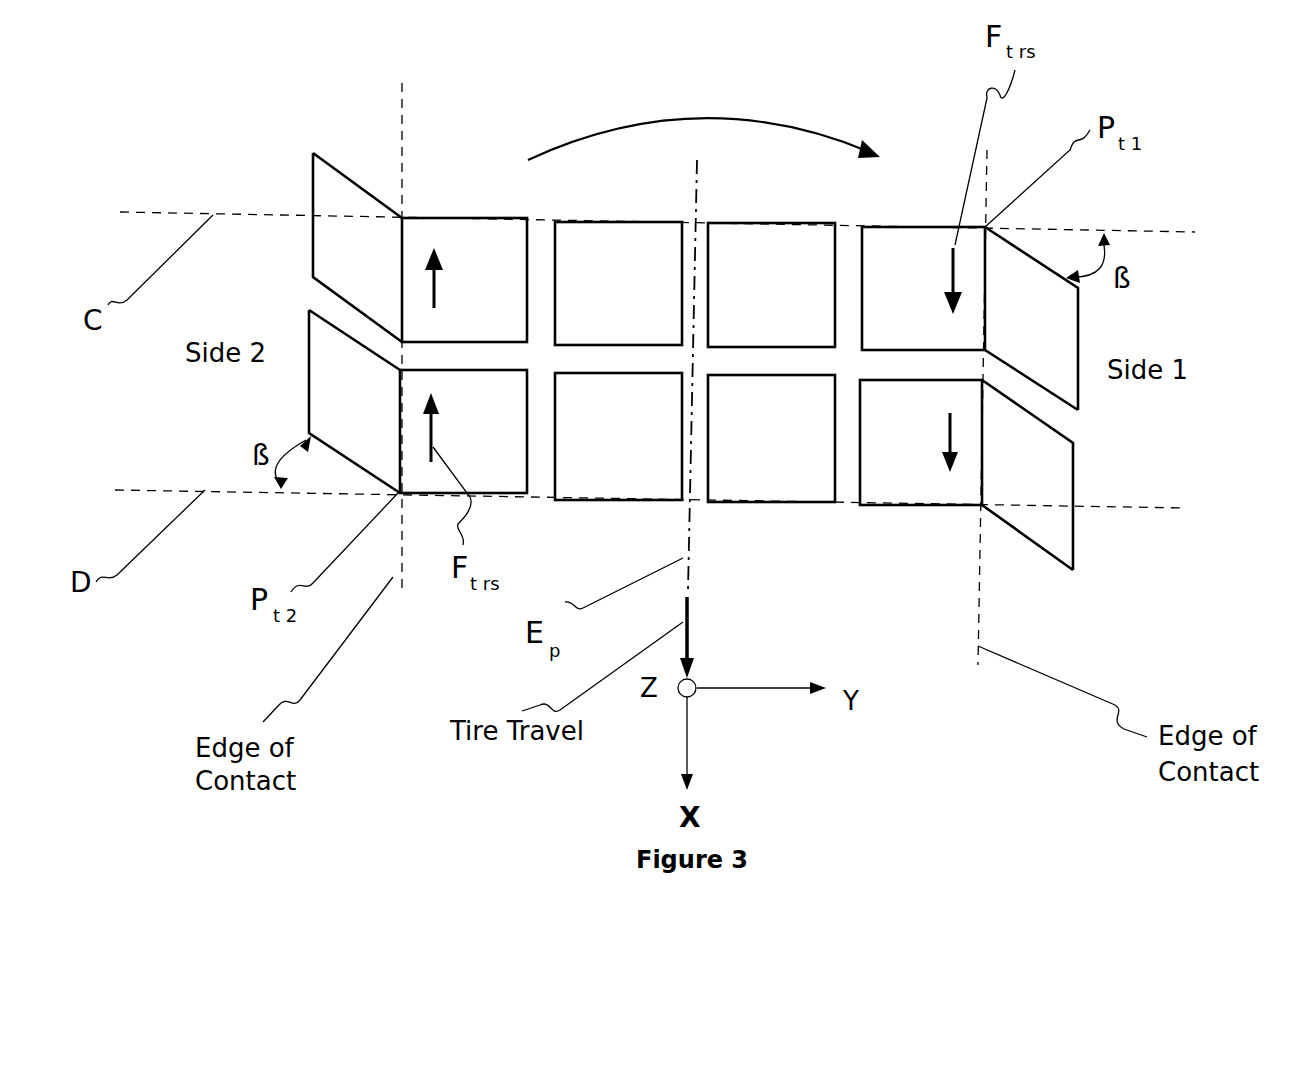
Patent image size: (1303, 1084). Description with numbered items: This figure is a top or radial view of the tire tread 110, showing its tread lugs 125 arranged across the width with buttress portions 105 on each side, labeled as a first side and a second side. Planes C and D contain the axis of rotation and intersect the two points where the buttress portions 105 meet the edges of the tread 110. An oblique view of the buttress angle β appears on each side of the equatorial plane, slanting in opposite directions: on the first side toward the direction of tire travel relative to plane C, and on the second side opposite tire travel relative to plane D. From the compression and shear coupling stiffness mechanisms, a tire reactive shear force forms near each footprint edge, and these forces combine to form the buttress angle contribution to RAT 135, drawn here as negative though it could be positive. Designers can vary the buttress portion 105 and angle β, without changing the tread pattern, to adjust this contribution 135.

The buttress portion 105 is at (357, 252).
The tread 110 is at (486, 202).
The tread lug 125 is at (762, 418).
The buttress angle contribution to RAT 135 is at (704, 119).